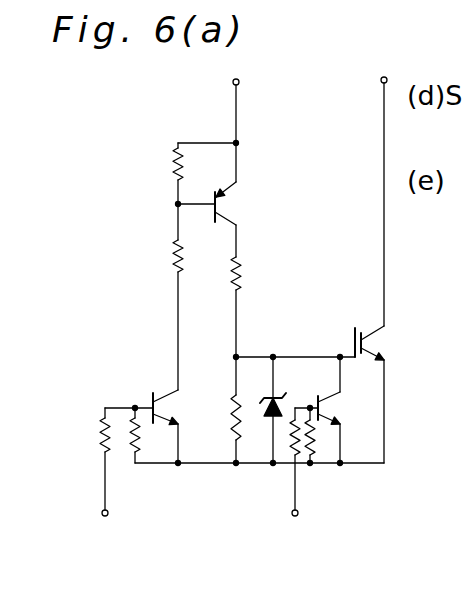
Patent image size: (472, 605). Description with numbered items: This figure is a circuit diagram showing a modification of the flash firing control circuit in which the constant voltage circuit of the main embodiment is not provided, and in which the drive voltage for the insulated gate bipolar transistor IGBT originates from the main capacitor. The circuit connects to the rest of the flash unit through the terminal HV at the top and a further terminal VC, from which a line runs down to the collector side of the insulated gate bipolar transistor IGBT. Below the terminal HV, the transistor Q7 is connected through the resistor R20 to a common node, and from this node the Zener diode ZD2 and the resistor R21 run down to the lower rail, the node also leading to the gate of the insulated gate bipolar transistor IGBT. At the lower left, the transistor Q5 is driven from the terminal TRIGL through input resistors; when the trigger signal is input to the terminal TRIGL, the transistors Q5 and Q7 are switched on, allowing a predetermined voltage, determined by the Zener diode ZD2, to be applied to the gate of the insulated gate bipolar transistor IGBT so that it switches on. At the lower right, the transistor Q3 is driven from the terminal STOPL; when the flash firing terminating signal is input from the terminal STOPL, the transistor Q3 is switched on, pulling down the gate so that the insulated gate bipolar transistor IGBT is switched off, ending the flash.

The transistor Q7 is at (247, 203).
The transistor Q5 is at (162, 426).
The transistor Q3 is at (338, 410).
The resistor R20 is at (268, 271).
The resistor R21 is at (233, 428).
The Zener diode ZD2 is at (284, 391).
The insulated gate bipolar transistor IGBT is at (408, 342).
The terminal HV is at (239, 84).
The collector voltage terminal VC is at (383, 77).
The terminal TRIGL is at (108, 484).
The terminal STOPL is at (311, 485).